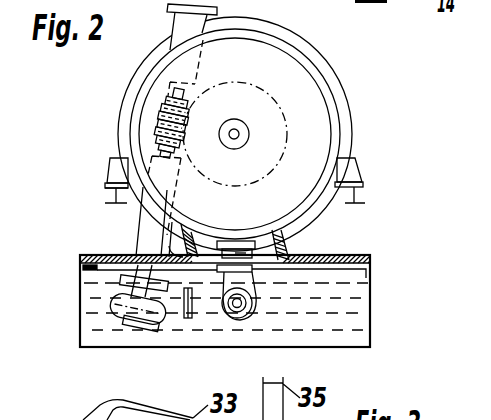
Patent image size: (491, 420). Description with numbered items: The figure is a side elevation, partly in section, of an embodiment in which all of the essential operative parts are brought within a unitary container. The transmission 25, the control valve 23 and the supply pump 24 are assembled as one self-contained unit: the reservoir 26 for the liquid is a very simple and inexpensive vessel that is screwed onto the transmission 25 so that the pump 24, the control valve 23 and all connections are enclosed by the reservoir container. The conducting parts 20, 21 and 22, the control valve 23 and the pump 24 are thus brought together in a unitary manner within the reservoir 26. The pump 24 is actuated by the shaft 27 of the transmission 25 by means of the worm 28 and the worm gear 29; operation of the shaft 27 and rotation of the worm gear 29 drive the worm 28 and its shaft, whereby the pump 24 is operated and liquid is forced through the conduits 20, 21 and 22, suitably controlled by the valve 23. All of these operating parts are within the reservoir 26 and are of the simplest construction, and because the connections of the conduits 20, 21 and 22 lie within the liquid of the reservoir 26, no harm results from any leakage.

The conducting part 20 is at (276, 243).
The conducting part 21 is at (213, 307).
The conducting part 22 is at (247, 258).
The control valve 23 is at (240, 309).
The pump 24 is at (142, 310).
The transmission 25 is at (300, 95).
The reservoir 26 is at (353, 307).
The shaft 27 is at (236, 133).
The worm 28 is at (160, 115).
The worm gear 29 is at (254, 74).